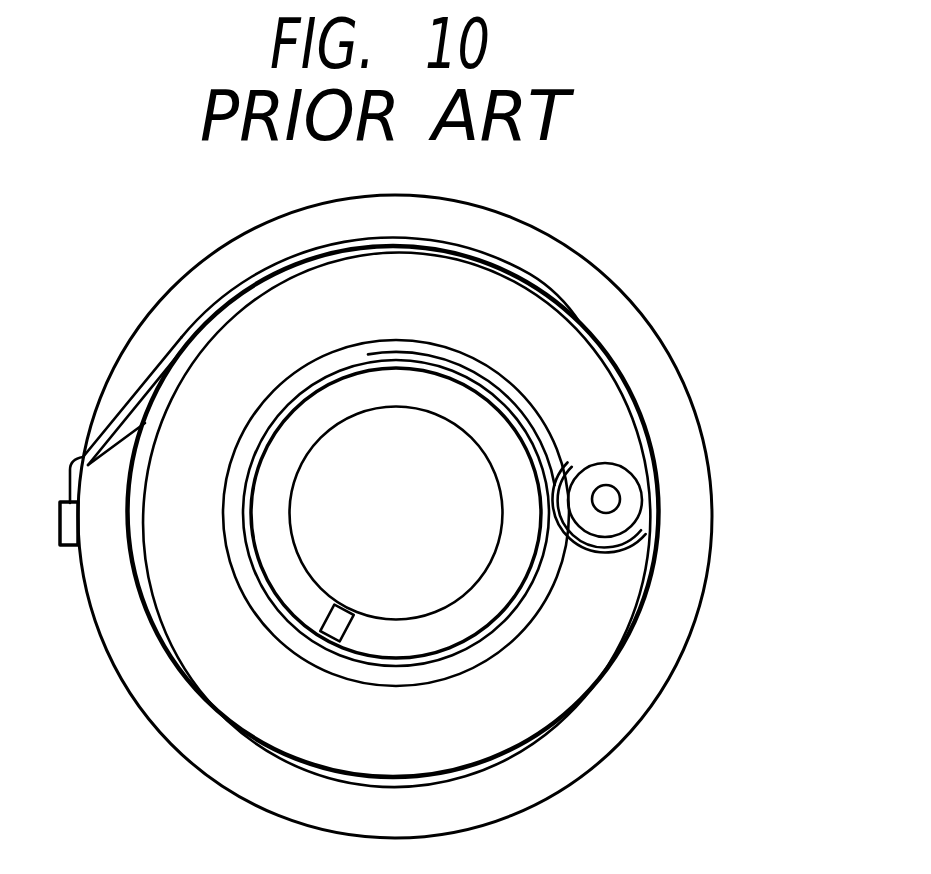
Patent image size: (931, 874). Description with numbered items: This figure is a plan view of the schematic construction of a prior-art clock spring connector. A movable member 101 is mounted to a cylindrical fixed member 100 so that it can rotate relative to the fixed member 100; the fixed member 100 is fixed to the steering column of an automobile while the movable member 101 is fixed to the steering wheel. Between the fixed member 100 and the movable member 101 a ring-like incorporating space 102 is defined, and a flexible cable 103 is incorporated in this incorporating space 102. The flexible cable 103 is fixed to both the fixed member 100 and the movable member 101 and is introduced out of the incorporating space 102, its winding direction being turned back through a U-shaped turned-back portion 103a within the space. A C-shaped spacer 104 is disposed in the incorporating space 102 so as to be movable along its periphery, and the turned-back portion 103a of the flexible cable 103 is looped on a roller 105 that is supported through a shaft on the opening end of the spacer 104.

The fixed member 100 is at (632, 324).
The movable member 101 is at (498, 572).
The incorporating space 102 is at (632, 587).
The flexible cable 103 is at (620, 387).
The turned-back portion 103a is at (640, 546).
The spacer 104 is at (553, 678).
The roller 105 is at (623, 482).